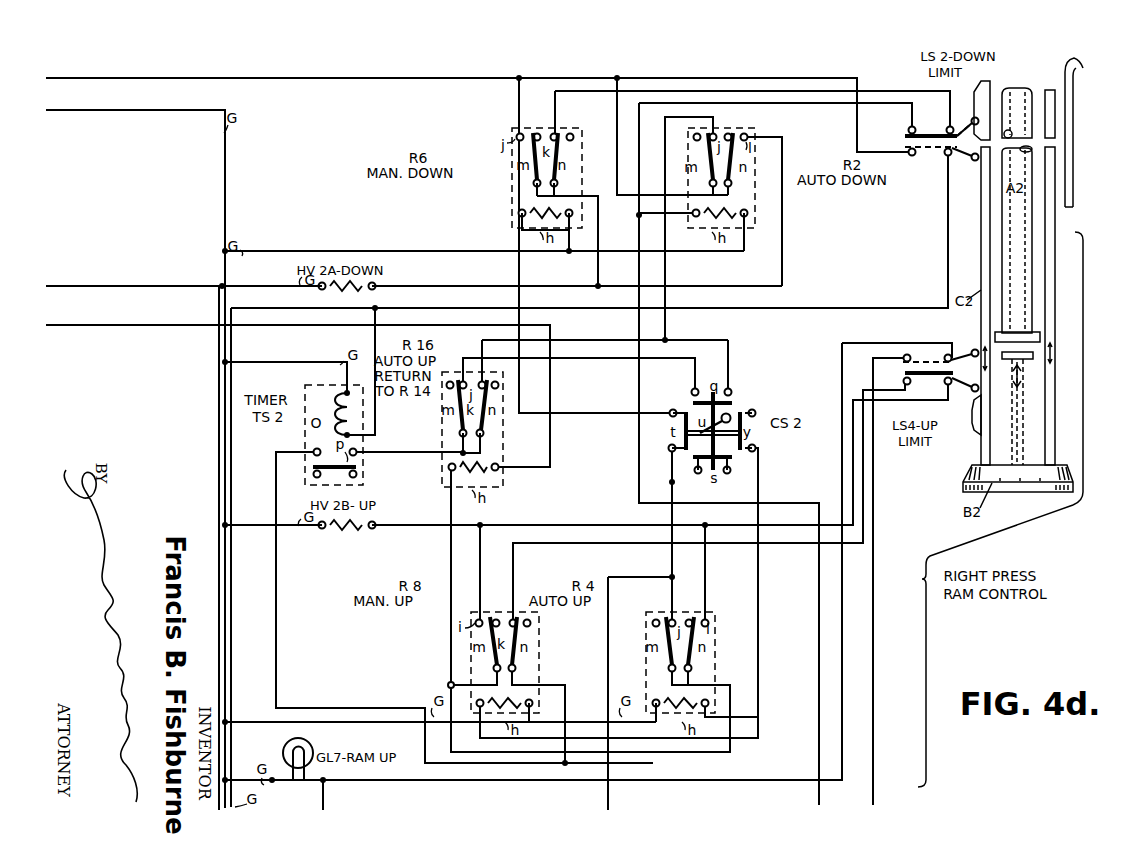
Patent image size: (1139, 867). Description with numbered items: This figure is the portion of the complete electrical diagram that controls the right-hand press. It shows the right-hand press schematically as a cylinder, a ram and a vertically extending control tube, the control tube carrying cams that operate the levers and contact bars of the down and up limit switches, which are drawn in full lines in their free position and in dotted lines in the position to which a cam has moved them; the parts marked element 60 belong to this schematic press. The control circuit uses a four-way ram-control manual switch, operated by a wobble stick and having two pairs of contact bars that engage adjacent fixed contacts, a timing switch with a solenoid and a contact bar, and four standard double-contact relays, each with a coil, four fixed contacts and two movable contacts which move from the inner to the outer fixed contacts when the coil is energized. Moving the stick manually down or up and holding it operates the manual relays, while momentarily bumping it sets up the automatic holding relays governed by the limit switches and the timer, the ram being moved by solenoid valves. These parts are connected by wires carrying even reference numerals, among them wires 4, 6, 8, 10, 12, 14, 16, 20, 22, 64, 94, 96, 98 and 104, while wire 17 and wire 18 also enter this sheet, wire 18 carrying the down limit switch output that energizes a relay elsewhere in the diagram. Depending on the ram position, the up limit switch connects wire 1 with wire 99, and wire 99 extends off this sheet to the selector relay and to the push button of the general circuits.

The wire 1 is at (874, 804).
The wire 4 is at (694, 392).
The wire 6 is at (388, 287).
The wire 8 is at (910, 129).
The wire 10 is at (948, 404).
The wire 12 is at (651, 763).
The wire 14 is at (899, 386).
The wire 16 is at (953, 126).
The wire 17 is at (219, 691).
The wire 18 is at (231, 696).
The wire 20 is at (672, 410).
The wire 22 is at (758, 737).
The press ram guide 60 is at (1062, 328).
The wire 64 is at (550, 385).
The wire 94 is at (608, 800).
The wire 96 is at (753, 404).
The wire 98 is at (480, 417).
The wire 99 is at (323, 800).
The wire 104 is at (409, 446).